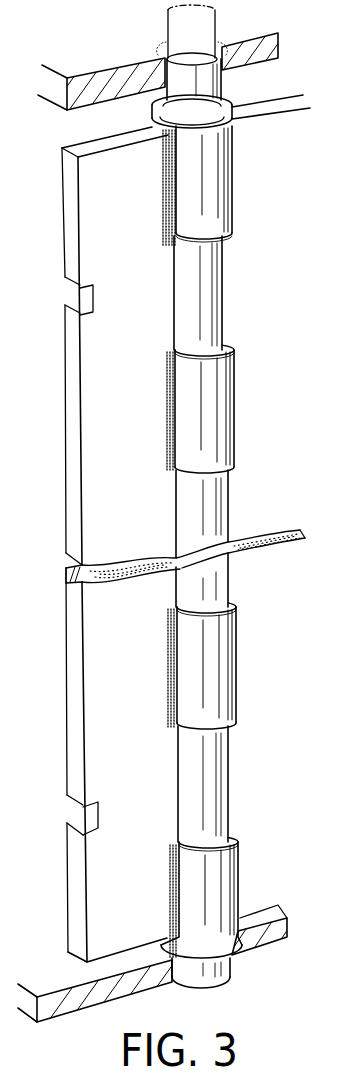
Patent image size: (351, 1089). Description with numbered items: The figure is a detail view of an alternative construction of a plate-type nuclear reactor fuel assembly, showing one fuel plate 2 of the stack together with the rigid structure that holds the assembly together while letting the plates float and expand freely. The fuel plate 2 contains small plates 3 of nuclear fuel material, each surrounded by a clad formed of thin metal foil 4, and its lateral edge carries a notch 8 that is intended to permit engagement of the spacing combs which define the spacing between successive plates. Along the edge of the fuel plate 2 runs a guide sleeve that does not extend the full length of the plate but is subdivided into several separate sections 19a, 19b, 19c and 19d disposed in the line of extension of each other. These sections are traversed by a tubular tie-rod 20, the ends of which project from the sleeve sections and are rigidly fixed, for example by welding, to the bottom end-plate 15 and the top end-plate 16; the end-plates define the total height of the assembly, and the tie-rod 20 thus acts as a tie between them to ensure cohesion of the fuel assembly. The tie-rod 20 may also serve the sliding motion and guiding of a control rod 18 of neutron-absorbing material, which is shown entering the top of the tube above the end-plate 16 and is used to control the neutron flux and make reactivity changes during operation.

The fuel plate 2 is at (103, 433).
The small plate of nuclear fuel material 3 is at (102, 580).
The thin metal foil 4 is at (260, 535).
The notch 8 is at (73, 287).
The bottom end-plate 15 is at (266, 940).
The top end-plate 16 is at (88, 83).
The control rod 18 is at (167, 25).
The guide sleeve section 19a is at (218, 865).
The guide sleeve section 19b is at (215, 680).
The guide sleeve section 19c is at (212, 423).
The guide sleeve section 19d is at (210, 197).
The tubular tie-rod 20 is at (203, 83).